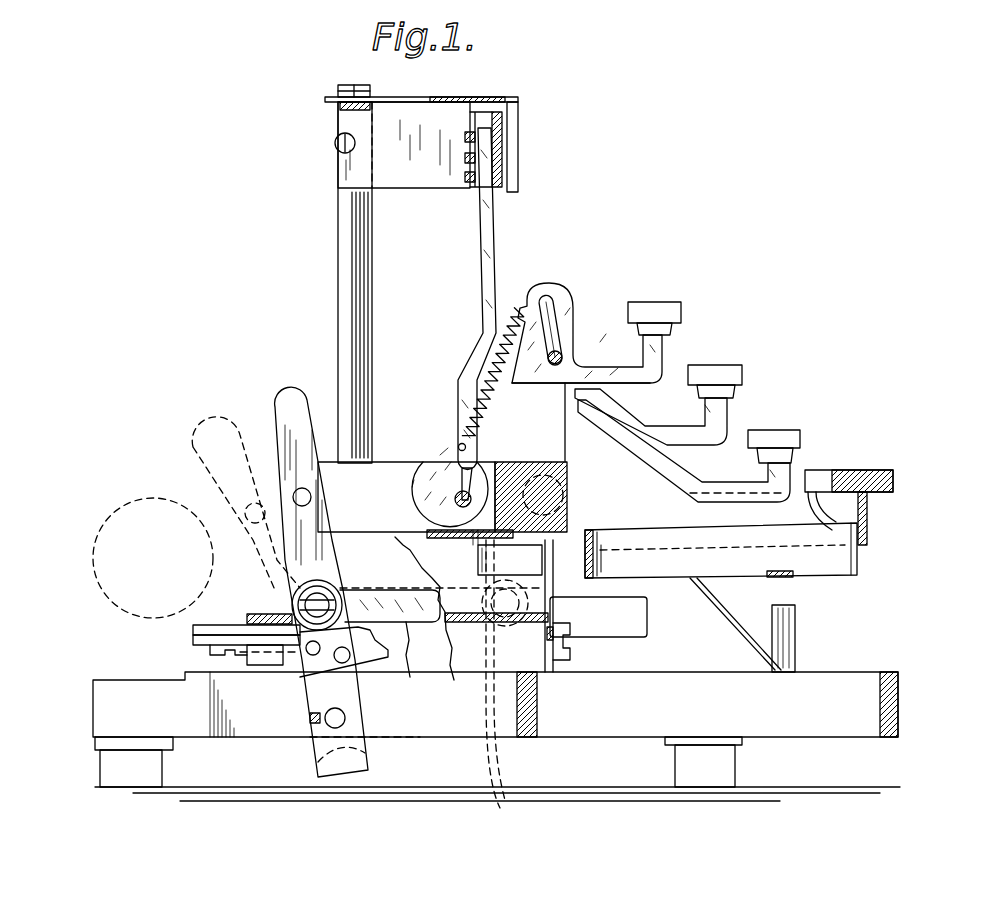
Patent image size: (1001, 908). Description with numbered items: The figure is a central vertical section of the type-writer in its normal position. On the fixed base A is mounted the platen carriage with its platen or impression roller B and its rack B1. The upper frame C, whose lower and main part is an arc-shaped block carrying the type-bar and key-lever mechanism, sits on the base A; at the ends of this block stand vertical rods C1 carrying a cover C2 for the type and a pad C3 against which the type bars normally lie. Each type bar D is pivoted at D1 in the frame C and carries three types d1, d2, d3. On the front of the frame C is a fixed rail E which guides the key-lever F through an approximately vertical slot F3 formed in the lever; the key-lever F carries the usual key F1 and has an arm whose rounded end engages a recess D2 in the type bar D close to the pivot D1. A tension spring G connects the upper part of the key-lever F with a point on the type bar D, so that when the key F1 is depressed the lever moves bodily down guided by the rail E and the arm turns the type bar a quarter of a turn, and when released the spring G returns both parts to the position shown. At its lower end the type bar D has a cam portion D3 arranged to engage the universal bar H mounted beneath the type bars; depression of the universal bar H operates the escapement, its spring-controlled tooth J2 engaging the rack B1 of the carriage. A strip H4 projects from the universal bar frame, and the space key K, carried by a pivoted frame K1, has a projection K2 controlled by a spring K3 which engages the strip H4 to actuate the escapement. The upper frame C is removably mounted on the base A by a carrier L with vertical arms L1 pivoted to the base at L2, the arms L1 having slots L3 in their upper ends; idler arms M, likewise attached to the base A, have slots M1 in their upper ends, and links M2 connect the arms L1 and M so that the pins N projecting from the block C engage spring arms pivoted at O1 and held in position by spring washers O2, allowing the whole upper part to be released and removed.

The fixed base A is at (496, 736).
The platen B is at (150, 500).
The rack B1 is at (246, 516).
The upper frame C is at (568, 470).
The vertical rods C1 is at (338, 265).
The cover C2 is at (433, 90).
The pad C3 is at (500, 150).
The type bar D is at (492, 215).
The pivot D1 is at (442, 508).
The recess D2 is at (452, 455).
The cam portion D3 is at (440, 507).
The type d1 is at (465, 178).
The type d2 is at (465, 157).
The type d3 is at (465, 135).
The fixed rail E is at (558, 352).
The key-lever F is at (641, 375).
The key F1 is at (770, 440).
The vertical slot F3 is at (546, 300).
The spring G is at (503, 348).
The universal bar H is at (440, 547).
The strip H4 is at (603, 613).
The spring-controlled tooth J2 is at (195, 640).
The space key K is at (846, 472).
The pivoted frame K1 is at (795, 500).
The projection K2 is at (842, 556).
The spring K3 is at (743, 636).
The carrier L is at (342, 780).
The vertical arms L1 is at (335, 690).
The pivot L2 is at (352, 700).
The slots L3 is at (280, 418).
The idler arms M is at (502, 812).
The slots M1 is at (478, 397).
The links M2 is at (461, 637).
The pins N is at (295, 496).
The pivot O1 is at (315, 604).
The spring washers O2 is at (303, 597).